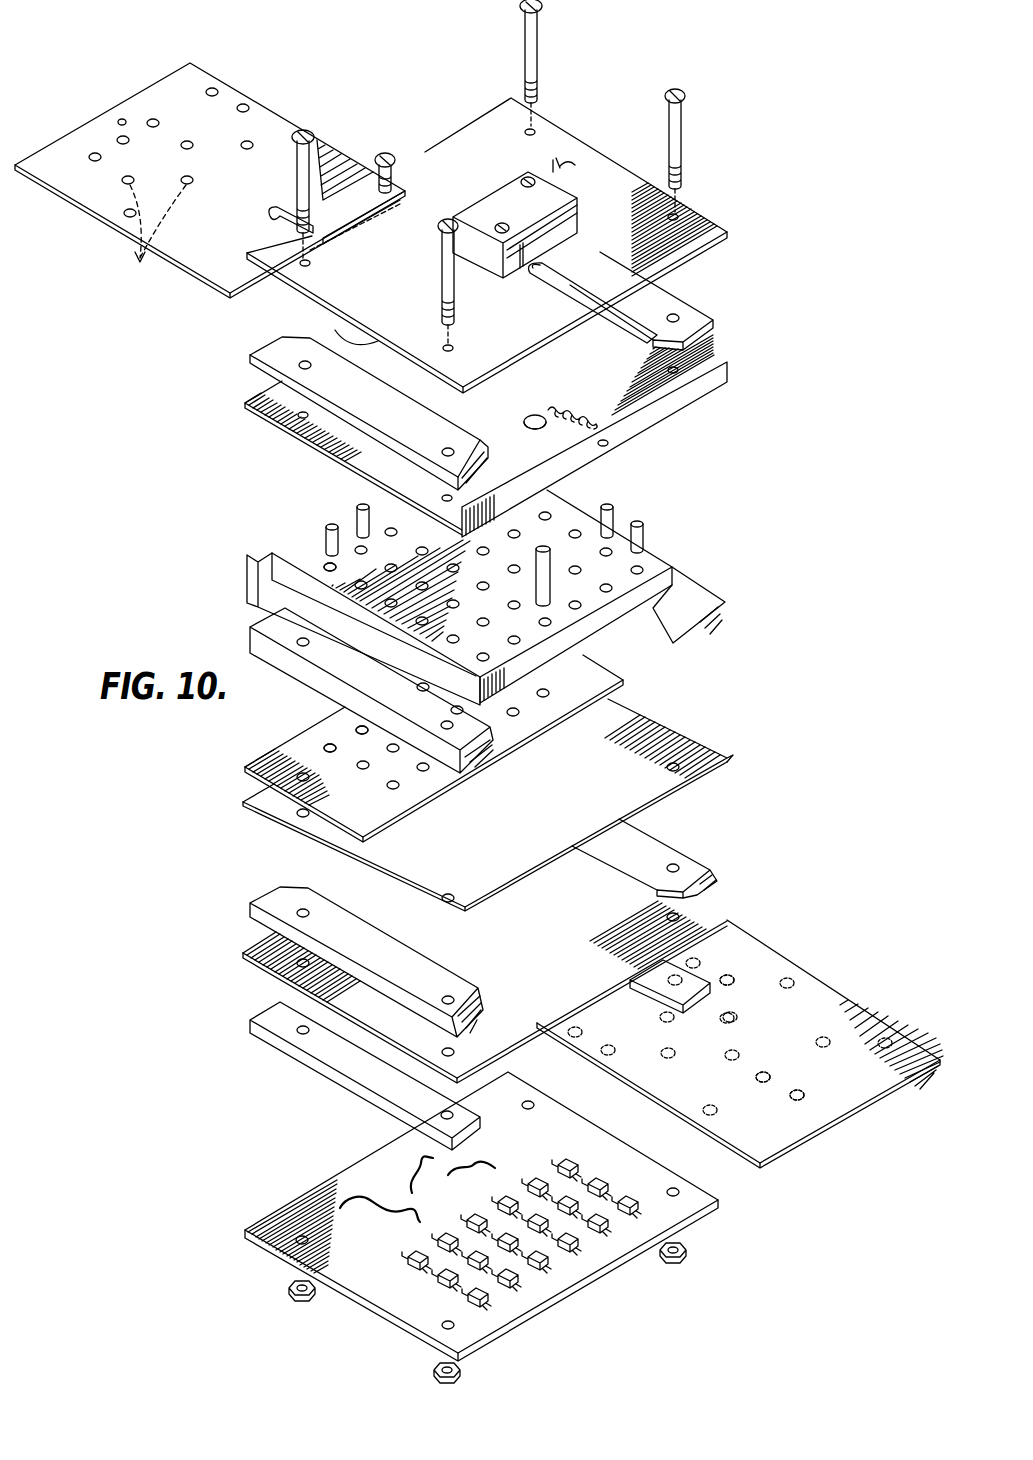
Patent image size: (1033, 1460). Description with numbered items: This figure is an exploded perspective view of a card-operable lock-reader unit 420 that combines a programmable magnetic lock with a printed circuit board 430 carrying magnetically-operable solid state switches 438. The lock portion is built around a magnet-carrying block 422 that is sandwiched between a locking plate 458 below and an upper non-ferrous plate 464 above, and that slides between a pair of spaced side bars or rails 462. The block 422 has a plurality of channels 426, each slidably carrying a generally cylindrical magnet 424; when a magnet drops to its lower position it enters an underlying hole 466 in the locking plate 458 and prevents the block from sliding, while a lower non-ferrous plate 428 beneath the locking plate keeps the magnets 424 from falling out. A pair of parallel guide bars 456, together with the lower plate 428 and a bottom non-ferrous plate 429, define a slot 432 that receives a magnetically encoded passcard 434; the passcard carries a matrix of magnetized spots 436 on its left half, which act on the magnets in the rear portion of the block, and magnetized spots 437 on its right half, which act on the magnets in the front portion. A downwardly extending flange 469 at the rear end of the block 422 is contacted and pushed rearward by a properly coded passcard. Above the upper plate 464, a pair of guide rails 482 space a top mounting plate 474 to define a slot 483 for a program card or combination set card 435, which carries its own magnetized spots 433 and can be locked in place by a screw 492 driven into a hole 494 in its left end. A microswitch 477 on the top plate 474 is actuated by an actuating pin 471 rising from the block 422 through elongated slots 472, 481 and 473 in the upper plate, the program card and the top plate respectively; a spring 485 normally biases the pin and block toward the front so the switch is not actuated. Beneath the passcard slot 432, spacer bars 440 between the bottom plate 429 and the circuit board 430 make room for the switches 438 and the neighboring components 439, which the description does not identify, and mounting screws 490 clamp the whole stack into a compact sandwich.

The lock-reader unit 420 is at (180, 848).
The magnet-carrying block 422 is at (580, 640).
The magnets 424 is at (392, 528).
The channels 426 is at (328, 564).
The lower non-ferrous plate 428 is at (685, 795).
The bottom non-ferrous plate 429 is at (243, 955).
The printed circuit board 430 is at (282, 1222).
The slot 432 is at (627, 878).
The magnetized spots 433 is at (149, 236).
The passcard 434 is at (855, 1017).
The program card 435 is at (90, 132).
The magnetized spots 436 is at (735, 1014).
The magnetized spots 437 is at (768, 1083).
The magnetically-operable solid state switches 438 is at (445, 1280).
The switch elements 439 is at (632, 1214).
The spacer bars 440 is at (692, 976).
The guide bars 456 is at (670, 862).
The locking plate 458 is at (266, 760).
The side bars 462 is at (700, 598).
The upper non-ferrous plate 464 is at (650, 395).
The holes 466 is at (360, 728).
The flange 469 is at (247, 572).
The actuating pin 471 is at (550, 575).
The elongated slot 472 is at (524, 420).
The elongated slot 473 is at (555, 265).
The top mounting plate 474 is at (560, 132).
The microswitch 477 is at (570, 219).
The elongated slot 481 is at (270, 222).
The guide rails 482 is at (703, 320).
The slot 483 is at (350, 342).
The spring 485 is at (577, 402).
The mounting screws 490 is at (313, 147).
The screw 492 is at (388, 153).
The hole 494 is at (124, 118).